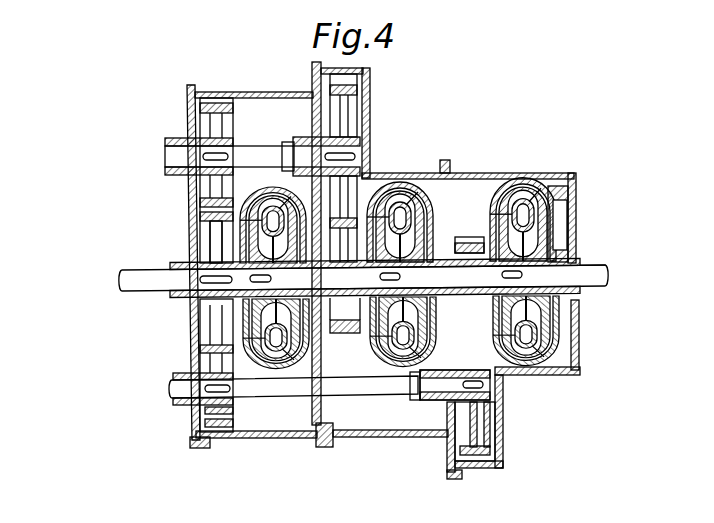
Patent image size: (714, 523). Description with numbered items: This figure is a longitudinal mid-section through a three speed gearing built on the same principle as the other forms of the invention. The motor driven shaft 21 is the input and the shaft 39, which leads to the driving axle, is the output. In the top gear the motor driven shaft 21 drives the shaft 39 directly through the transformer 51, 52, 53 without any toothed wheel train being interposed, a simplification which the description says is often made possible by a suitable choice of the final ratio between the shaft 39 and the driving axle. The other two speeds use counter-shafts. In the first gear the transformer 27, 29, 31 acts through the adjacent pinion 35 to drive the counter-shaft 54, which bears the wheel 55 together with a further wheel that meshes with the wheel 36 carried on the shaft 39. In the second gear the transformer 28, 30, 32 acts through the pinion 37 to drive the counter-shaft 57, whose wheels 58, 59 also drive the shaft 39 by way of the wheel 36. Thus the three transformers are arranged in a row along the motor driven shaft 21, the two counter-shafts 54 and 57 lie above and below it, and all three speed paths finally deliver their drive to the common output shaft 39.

The motor driven shaft 21 is at (603, 291).
The transformer element 27 is at (510, 240).
The transformer element 28 is at (387, 192).
The transformer element 29 is at (562, 187).
The transformer element 30 is at (397, 190).
The transformer element 31 is at (543, 240).
The transformer element 32 is at (420, 240).
The pinion 35 is at (468, 243).
The wheel 36 is at (228, 236).
The pinion 37 is at (350, 334).
The shaft 39 is at (130, 289).
The transformer element 51 is at (258, 345).
The transformer element 52 is at (274, 366).
The transformer element 53 is at (296, 340).
The counter-shaft 54 is at (311, 390).
The wheel 55 is at (481, 415).
The counter-shaft 57 is at (257, 150).
The wheel 58 is at (357, 115).
The wheel 59 is at (226, 194).